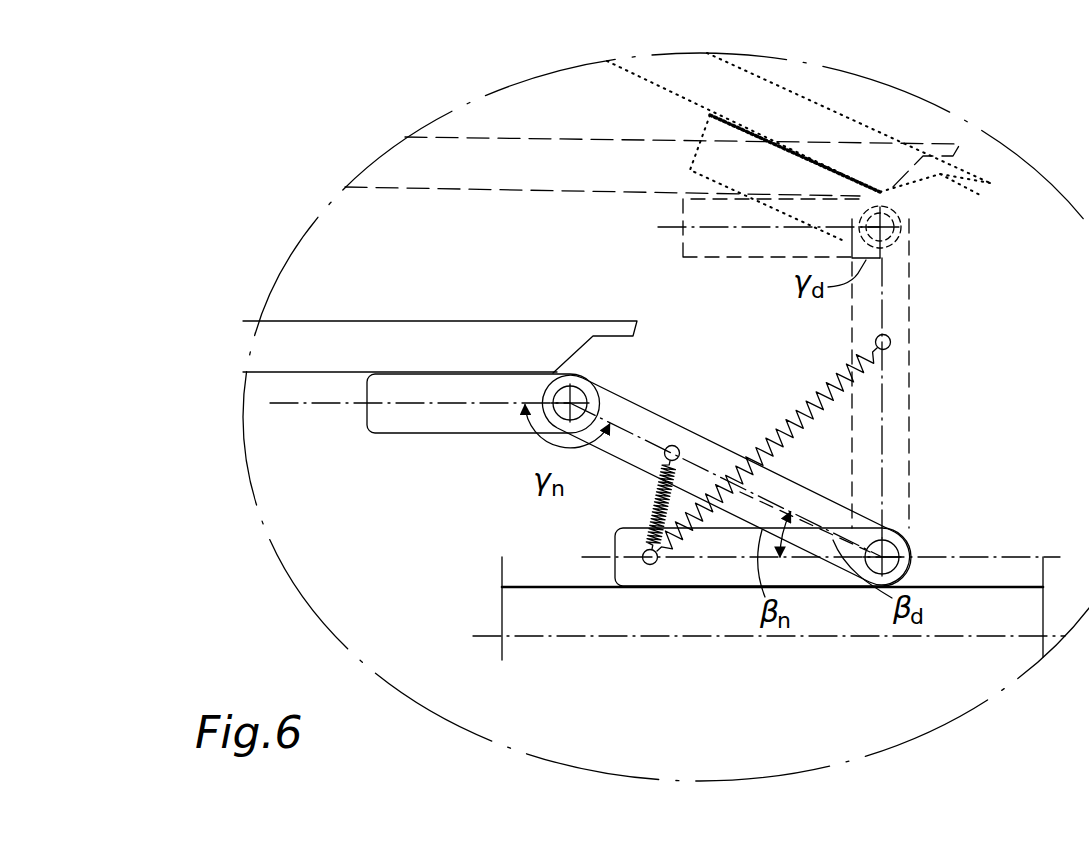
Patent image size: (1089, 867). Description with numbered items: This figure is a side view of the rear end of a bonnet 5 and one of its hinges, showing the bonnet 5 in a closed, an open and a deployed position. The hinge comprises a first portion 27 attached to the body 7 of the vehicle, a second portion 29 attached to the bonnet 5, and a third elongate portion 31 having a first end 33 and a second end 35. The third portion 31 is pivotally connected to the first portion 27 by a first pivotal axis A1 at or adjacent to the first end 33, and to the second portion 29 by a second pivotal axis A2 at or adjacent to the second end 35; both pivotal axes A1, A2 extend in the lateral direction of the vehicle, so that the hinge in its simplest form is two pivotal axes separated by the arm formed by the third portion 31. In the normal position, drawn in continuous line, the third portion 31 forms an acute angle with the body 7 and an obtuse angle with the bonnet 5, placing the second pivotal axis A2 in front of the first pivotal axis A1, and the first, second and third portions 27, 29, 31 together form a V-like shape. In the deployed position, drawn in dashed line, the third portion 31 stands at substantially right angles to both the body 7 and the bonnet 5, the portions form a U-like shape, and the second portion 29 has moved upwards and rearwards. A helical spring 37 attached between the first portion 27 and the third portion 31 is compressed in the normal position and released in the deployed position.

The bonnet 5 is at (460, 162).
The body 7 is at (588, 608).
The first portion 27 is at (720, 567).
The second portion 29 is at (450, 407).
The third elongate portion 31 is at (800, 507).
The first end 33 is at (865, 504).
The second end 35 is at (626, 372).
The helical spring 37 is at (680, 497).
The first pivotal axis A1 is at (886, 552).
The second pivotal axis A2 is at (932, 226).